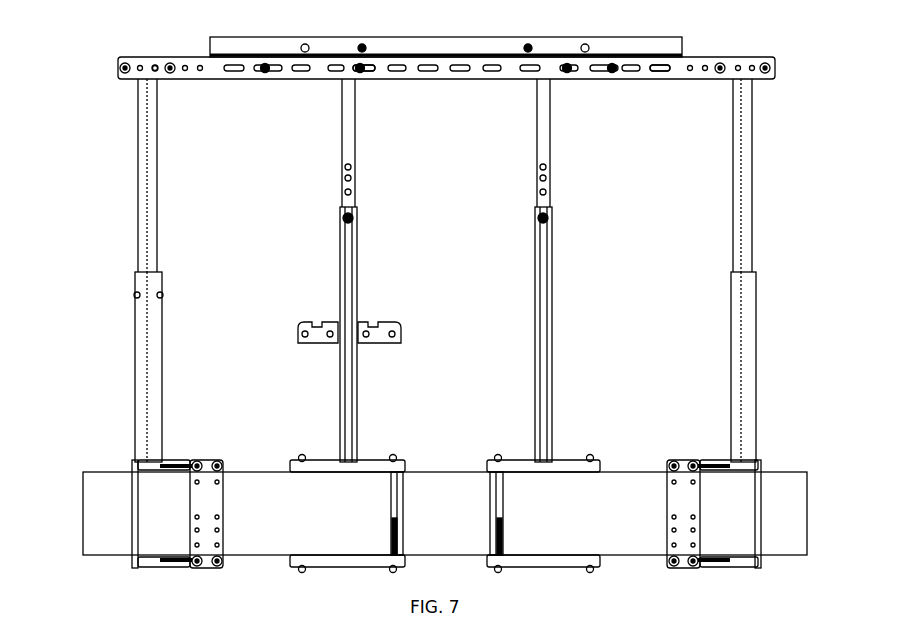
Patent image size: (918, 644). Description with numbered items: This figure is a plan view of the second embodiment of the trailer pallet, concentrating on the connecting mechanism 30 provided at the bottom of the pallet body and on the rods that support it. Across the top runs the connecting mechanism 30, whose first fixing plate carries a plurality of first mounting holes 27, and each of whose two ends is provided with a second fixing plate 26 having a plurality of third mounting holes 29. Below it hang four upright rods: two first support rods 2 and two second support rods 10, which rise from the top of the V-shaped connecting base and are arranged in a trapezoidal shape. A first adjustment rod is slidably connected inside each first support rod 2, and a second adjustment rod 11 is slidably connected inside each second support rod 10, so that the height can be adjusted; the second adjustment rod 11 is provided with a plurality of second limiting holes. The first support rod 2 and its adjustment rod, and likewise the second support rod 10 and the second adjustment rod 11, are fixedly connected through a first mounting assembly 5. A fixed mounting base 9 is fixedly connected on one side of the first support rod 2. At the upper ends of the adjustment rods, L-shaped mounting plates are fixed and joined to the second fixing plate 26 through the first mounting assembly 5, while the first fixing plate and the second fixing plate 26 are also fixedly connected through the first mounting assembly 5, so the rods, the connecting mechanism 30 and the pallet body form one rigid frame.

The first support rod 2 is at (538, 347).
The first mounting assembly 5 is at (775, 72).
The fixed mounting base 9 is at (300, 333).
The second support rod 10 is at (150, 386).
The second adjustment rod 11 is at (743, 233).
The second fixing plate 26 is at (120, 70).
The first mounting hole 27 is at (672, 76).
The third mounting hole 29 is at (155, 66).
The connecting mechanism 30 is at (387, 70).